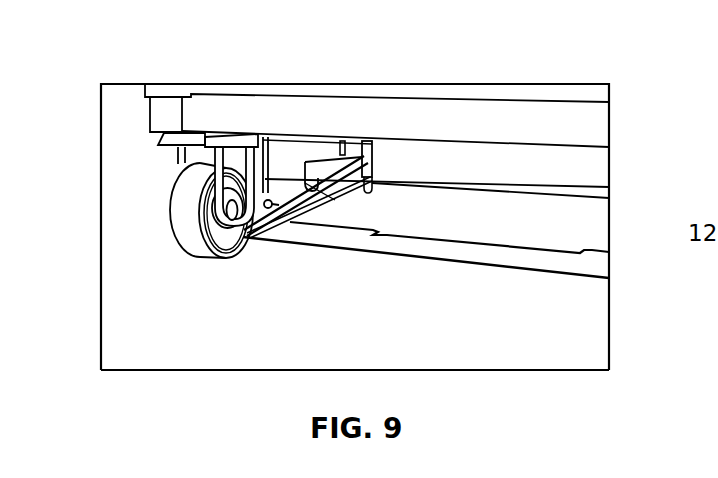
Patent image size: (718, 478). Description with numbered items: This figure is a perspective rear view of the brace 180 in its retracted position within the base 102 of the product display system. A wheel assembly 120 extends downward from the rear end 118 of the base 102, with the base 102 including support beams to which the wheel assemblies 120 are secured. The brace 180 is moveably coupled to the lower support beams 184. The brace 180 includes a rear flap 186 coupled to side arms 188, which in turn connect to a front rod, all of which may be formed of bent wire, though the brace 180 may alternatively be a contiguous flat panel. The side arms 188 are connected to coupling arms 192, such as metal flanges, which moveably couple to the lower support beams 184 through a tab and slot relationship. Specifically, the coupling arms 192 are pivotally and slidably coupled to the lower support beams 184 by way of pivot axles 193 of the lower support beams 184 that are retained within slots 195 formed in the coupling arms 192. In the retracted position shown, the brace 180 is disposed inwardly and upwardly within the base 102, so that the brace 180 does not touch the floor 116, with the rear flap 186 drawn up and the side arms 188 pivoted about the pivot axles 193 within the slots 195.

The base 102 is at (618, 134).
The floor 116 is at (257, 331).
The rear end 118 is at (618, 116).
The wheel assembly 120 is at (177, 207).
The brace 180 is at (407, 262).
The lower support beam 184 is at (272, 128).
The rear flap 186 is at (522, 270).
The side arm 188 is at (326, 214).
The coupling arm 192 is at (337, 160).
The pivot axle 193 is at (340, 188).
The slot 195 is at (374, 158).